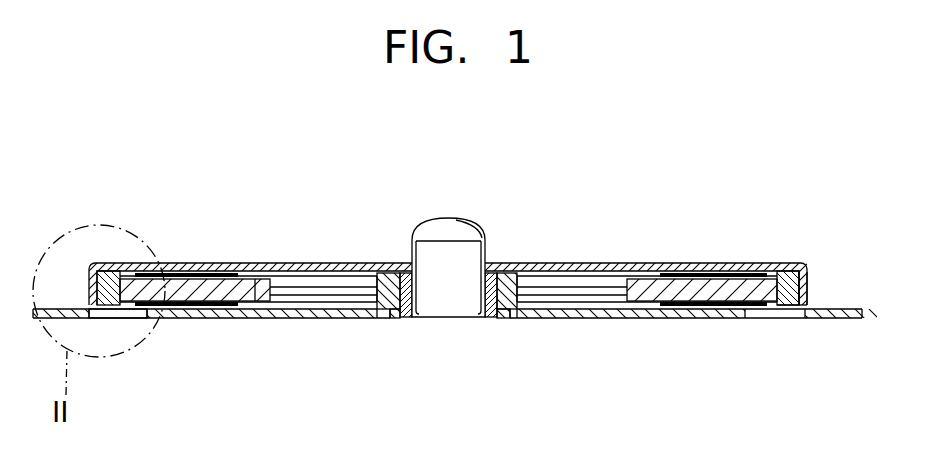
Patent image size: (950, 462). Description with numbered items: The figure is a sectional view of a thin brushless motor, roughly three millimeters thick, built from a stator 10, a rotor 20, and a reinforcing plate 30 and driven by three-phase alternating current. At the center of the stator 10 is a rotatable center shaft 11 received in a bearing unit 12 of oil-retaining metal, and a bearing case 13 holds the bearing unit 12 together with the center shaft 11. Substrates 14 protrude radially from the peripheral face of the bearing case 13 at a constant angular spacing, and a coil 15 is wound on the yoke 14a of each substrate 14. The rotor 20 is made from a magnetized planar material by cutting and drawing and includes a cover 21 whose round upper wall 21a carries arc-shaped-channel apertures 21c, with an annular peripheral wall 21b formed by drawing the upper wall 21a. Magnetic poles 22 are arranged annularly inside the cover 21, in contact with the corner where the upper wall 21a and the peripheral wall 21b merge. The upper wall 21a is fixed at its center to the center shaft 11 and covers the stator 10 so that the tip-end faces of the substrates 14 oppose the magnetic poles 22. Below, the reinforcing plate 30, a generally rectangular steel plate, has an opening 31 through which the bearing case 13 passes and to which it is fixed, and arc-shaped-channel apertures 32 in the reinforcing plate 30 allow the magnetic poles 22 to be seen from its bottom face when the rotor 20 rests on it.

The stator 10 is at (455, 363).
The center shaft 11 is at (453, 220).
The bearing unit 12 is at (494, 264).
The bearing case 13 is at (388, 300).
The substrate 14 is at (248, 242).
The yoke 14a is at (263, 278).
The coil 15 is at (197, 272).
The rotor 20 is at (500, 267).
The cover 21 is at (799, 263).
The upper wall 21a is at (617, 264).
The peripheral wall 21b is at (808, 284).
The arc-shaped-channel aperture 21c is at (131, 265).
The magnetic pole 22 is at (790, 309).
The reinforcing plate 30 is at (455, 350).
The opening 31 is at (506, 300).
The arc-shaped-channel aperture 32 is at (124, 320).